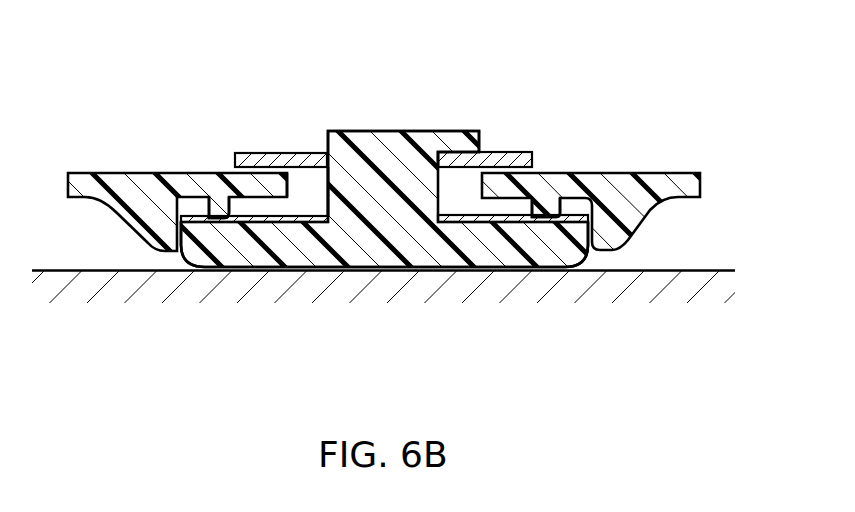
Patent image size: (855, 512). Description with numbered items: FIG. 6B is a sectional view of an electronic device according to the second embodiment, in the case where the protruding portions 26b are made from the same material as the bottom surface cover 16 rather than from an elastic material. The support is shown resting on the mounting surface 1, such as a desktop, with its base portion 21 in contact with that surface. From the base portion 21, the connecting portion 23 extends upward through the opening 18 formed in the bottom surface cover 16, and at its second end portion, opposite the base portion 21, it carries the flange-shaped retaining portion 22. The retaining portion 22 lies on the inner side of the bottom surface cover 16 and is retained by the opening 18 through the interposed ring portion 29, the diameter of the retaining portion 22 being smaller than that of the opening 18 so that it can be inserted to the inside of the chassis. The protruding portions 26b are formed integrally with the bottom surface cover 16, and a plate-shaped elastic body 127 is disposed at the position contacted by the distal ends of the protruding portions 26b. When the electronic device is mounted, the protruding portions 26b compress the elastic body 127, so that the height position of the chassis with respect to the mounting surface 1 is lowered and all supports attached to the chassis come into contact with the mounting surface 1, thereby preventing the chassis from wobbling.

The mounting surface 1 is at (704, 268).
The bottom surface cover 16 is at (140, 178).
The opening 18 is at (297, 178).
The base portion 21 is at (513, 222).
The retaining portion 22 is at (388, 142).
The connecting portion 23 is at (392, 207).
The protruding portions 26b is at (226, 208).
The ring portion 29 is at (267, 150).
The plate-shaped elastic body 127 is at (285, 218).